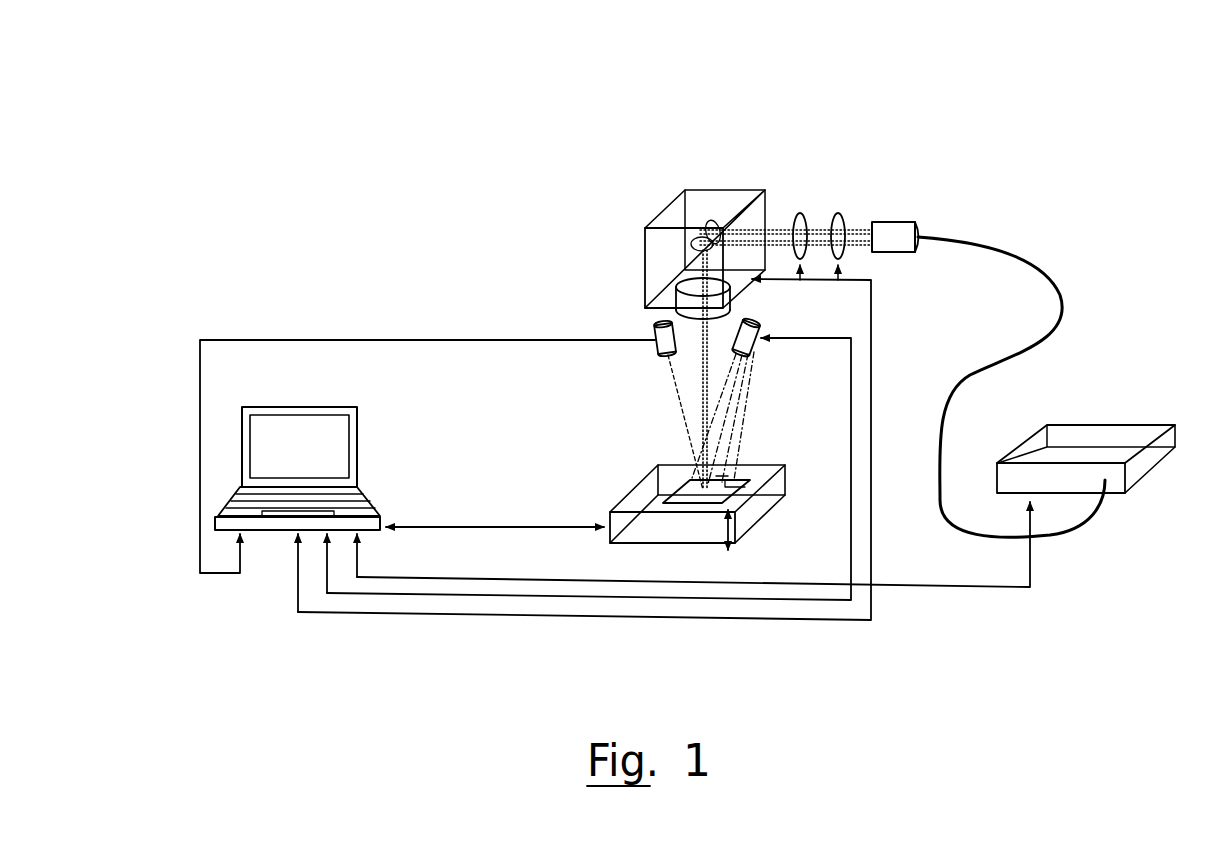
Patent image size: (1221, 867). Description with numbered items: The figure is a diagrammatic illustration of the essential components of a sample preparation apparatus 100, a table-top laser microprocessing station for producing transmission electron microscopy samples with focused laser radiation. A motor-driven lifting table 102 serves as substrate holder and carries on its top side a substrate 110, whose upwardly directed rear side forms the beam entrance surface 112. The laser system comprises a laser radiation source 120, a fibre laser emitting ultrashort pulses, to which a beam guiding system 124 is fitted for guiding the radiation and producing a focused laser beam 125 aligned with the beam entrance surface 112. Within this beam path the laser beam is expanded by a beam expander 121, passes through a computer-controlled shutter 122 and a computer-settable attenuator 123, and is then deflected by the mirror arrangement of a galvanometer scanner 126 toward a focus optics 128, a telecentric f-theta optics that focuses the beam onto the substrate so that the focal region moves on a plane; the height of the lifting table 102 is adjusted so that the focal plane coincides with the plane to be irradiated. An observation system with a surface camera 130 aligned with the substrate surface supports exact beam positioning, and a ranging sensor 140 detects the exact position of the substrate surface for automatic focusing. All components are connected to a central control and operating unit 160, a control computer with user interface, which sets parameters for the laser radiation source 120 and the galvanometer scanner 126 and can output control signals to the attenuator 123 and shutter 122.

The sample preparation apparatus 100 is at (416, 113).
The lifting table 102 is at (754, 513).
The substrate 110 is at (738, 488).
The beam entrance surface 112 is at (726, 468).
The laser radiation source 120 is at (1115, 359).
The beam expander 121 is at (908, 216).
The shutter 122 is at (840, 213).
The attenuator 123 is at (800, 214).
The beam guiding system 124 is at (905, 132).
The focused laser beam 125 is at (707, 363).
The galvanometer scanner 126 is at (710, 200).
The focus optics 128 is at (673, 302).
The surface camera 130 is at (750, 323).
The ranging sensor 140 is at (657, 345).
The central control and operating unit 160 is at (390, 436).